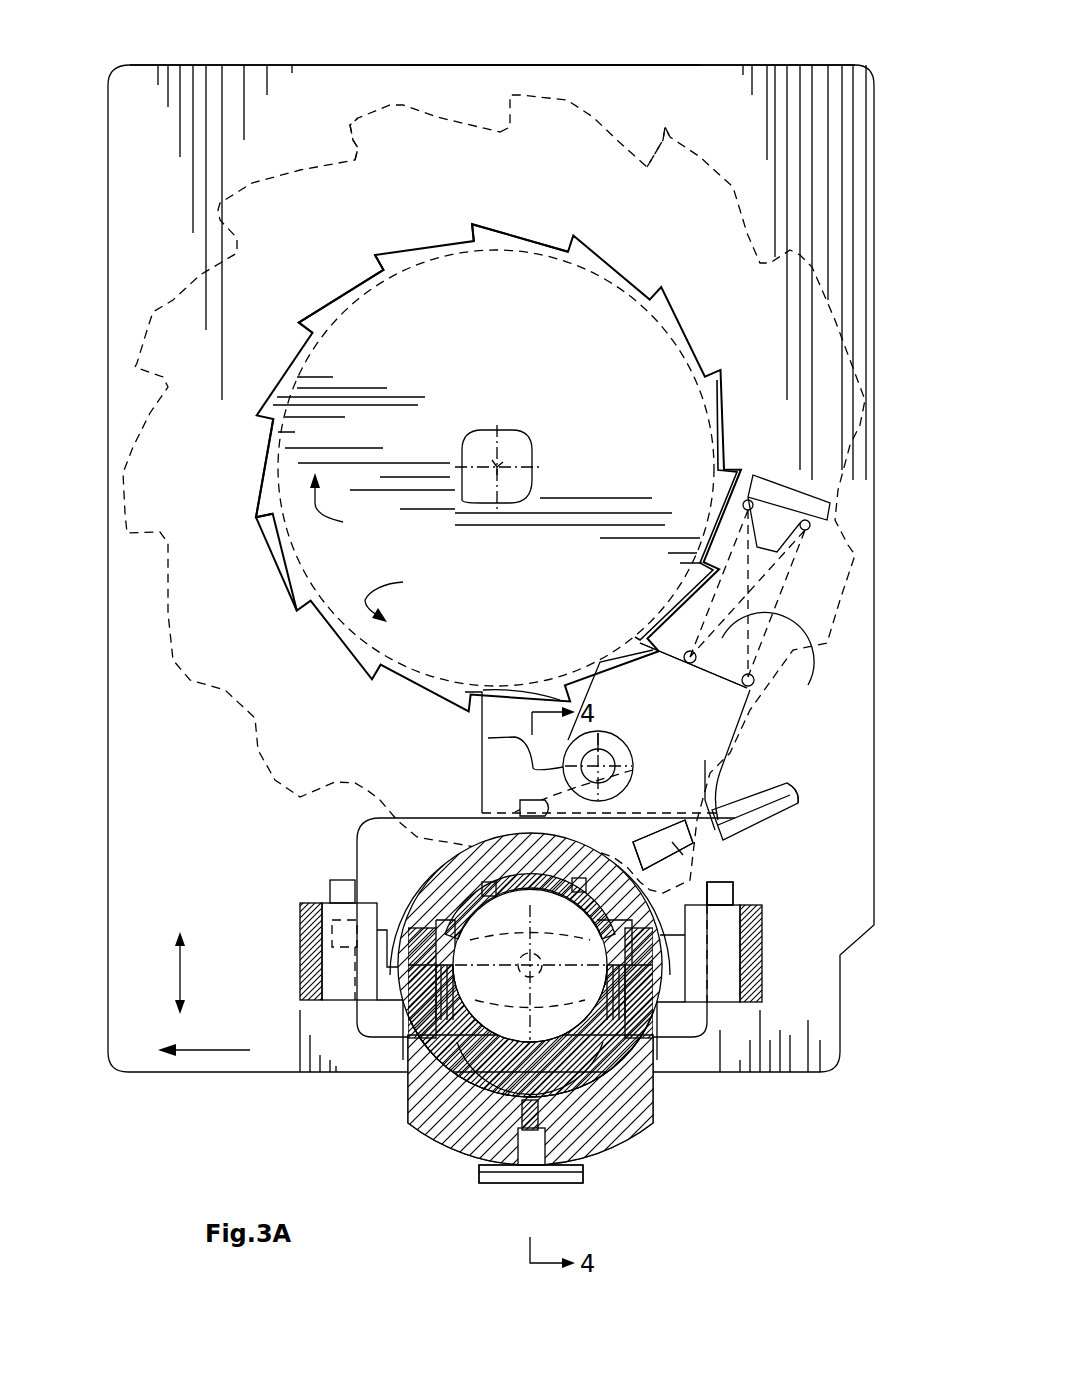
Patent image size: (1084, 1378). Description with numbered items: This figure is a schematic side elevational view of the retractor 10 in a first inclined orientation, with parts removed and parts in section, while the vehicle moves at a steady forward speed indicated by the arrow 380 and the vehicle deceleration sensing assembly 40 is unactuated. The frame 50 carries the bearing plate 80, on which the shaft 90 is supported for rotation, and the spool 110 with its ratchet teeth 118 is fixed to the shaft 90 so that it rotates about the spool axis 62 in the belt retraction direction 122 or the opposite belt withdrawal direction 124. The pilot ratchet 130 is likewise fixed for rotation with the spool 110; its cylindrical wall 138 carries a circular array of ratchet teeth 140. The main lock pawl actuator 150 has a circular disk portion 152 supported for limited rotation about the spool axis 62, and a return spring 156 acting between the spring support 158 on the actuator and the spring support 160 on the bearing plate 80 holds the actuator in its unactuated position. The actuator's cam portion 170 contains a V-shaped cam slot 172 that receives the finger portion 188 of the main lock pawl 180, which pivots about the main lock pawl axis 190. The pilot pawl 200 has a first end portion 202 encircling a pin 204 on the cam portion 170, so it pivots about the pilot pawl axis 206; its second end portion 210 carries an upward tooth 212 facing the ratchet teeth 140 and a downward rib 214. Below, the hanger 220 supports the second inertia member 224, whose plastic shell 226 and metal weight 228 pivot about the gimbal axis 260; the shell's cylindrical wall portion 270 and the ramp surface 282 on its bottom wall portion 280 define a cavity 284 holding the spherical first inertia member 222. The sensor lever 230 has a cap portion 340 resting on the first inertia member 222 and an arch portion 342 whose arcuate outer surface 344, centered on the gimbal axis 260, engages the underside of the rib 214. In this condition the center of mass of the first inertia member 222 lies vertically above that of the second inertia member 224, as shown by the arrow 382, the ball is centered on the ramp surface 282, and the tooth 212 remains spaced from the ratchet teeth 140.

The retractor 10 is at (292, 60).
The bearing plate 80 is at (440, 60).
The frame 50 is at (575, 60).
The spool 110 is at (592, 112).
The ratchet teeth 118 is at (348, 142).
The pilot ratchet 130 is at (630, 268).
The cylindrical wall 138 is at (540, 248).
The ratchet teeth 140 is at (376, 254).
The circular disk portion 152 is at (298, 562).
The belt retraction direction 122 is at (348, 508).
The belt withdrawal direction 124 is at (408, 596).
The shaft 90 is at (548, 446).
The spool axis 62 is at (500, 460).
The return spring 156 is at (700, 528).
The spring support 160 is at (772, 487).
The pilot pawl axis 206 is at (628, 745).
The spring support 158 is at (755, 660).
The cam portion 170 is at (756, 712).
The main lock pawl actuator 150 is at (770, 714).
The cam slot 172 is at (706, 790).
The finger portion 188 is at (668, 860).
The main lock pawl 180 is at (805, 793).
The main lock pawl axis 190 is at (798, 810).
The pilot pawl 200 is at (645, 750).
The pin 204 is at (613, 733).
The first end portion 202 is at (632, 780).
The tooth 212 is at (484, 722).
The second end portion 210 is at (495, 770).
The rib 214 is at (520, 810).
The cap portion 340 is at (505, 870).
The cylindrical wall portion 270 is at (408, 1008).
The hanger 220 is at (300, 892).
The arcuate outer surface 344 is at (758, 944).
The arch portion 342 is at (680, 893).
The second inertia member 224 is at (672, 1131).
The gimbal axis 260 is at (530, 1008).
The bottom wall portion 280 is at (482, 1088).
The first inertia member 222 is at (530, 965).
The sensor lever 230 is at (462, 893).
The ramp surface 282 is at (500, 1040).
The cavity 284 is at (640, 1000).
The plastic shell 226 is at (475, 1090).
The metal weight 228 is at (612, 1158).
The vehicle deceleration sensing assembly 40 is at (516, 1192).
The vertically extending arrow 382 is at (204, 973).
The arrow 380 is at (204, 1038).